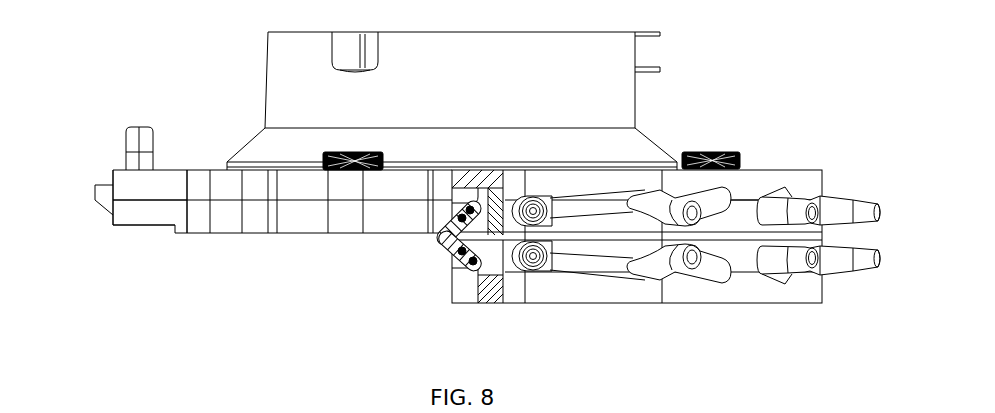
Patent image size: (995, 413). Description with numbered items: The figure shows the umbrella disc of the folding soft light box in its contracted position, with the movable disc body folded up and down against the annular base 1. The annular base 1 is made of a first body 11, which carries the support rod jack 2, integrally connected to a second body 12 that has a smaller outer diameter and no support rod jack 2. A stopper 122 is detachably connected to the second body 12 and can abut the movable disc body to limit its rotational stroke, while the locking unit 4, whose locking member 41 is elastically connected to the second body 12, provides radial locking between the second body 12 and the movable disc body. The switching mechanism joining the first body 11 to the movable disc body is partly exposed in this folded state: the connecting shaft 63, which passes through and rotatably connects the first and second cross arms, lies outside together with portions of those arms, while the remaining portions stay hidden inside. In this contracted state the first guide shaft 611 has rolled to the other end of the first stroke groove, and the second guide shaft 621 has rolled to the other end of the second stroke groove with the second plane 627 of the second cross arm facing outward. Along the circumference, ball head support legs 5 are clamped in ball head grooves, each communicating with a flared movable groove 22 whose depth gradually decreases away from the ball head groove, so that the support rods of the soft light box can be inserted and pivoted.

The annular base 1 is at (750, 290).
The first body 11 is at (802, 177).
The second body 12 is at (177, 172).
The stopper 122 is at (727, 155).
The support rod jack 2 is at (606, 282).
The movable groove 22 is at (583, 209).
The locking unit 4 is at (109, 184).
The locking member 41 is at (102, 194).
The ball head support leg 5 is at (837, 210).
The first guide shaft 611 is at (438, 222).
The connecting shaft 63 is at (432, 242).
The second plane 627 is at (438, 267).
The second guide shaft 621 is at (468, 276).